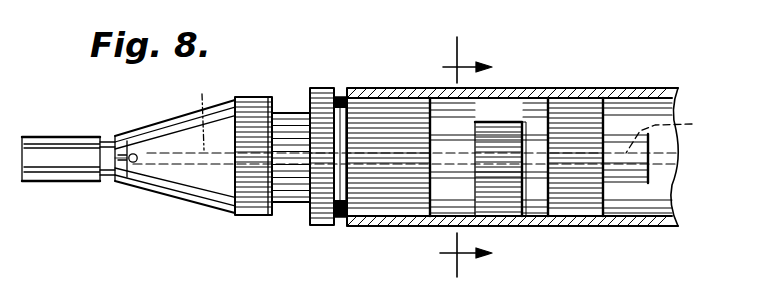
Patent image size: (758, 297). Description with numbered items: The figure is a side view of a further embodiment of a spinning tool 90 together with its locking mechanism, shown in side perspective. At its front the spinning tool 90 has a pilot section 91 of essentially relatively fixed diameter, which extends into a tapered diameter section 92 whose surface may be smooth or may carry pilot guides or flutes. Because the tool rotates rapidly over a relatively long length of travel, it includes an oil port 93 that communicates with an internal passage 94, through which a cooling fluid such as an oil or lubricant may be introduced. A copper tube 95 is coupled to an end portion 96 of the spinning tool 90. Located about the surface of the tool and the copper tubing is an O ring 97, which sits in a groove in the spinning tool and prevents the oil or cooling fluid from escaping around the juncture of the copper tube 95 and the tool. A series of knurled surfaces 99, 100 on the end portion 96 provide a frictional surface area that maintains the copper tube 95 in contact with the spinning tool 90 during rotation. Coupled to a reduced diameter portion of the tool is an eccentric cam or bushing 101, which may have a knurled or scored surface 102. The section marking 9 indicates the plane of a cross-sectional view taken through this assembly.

The spinning tool 90 is at (163, 128).
The pilot section 91 is at (50, 138).
The tapered diameter section 92 is at (206, 189).
The oil port 93 is at (133, 164).
The internal passage 94 is at (459, 110).
The copper tube 95 is at (363, 92).
The end portion 96 is at (381, 200).
The O ring 97 is at (338, 222).
The knurled surface 99 is at (383, 123).
The knurled surface 100 is at (578, 120).
The eccentric cam or bushing 101 is at (502, 130).
The knurled or scored surface 102 is at (513, 195).
The section line 9- 9 is at (477, 157).